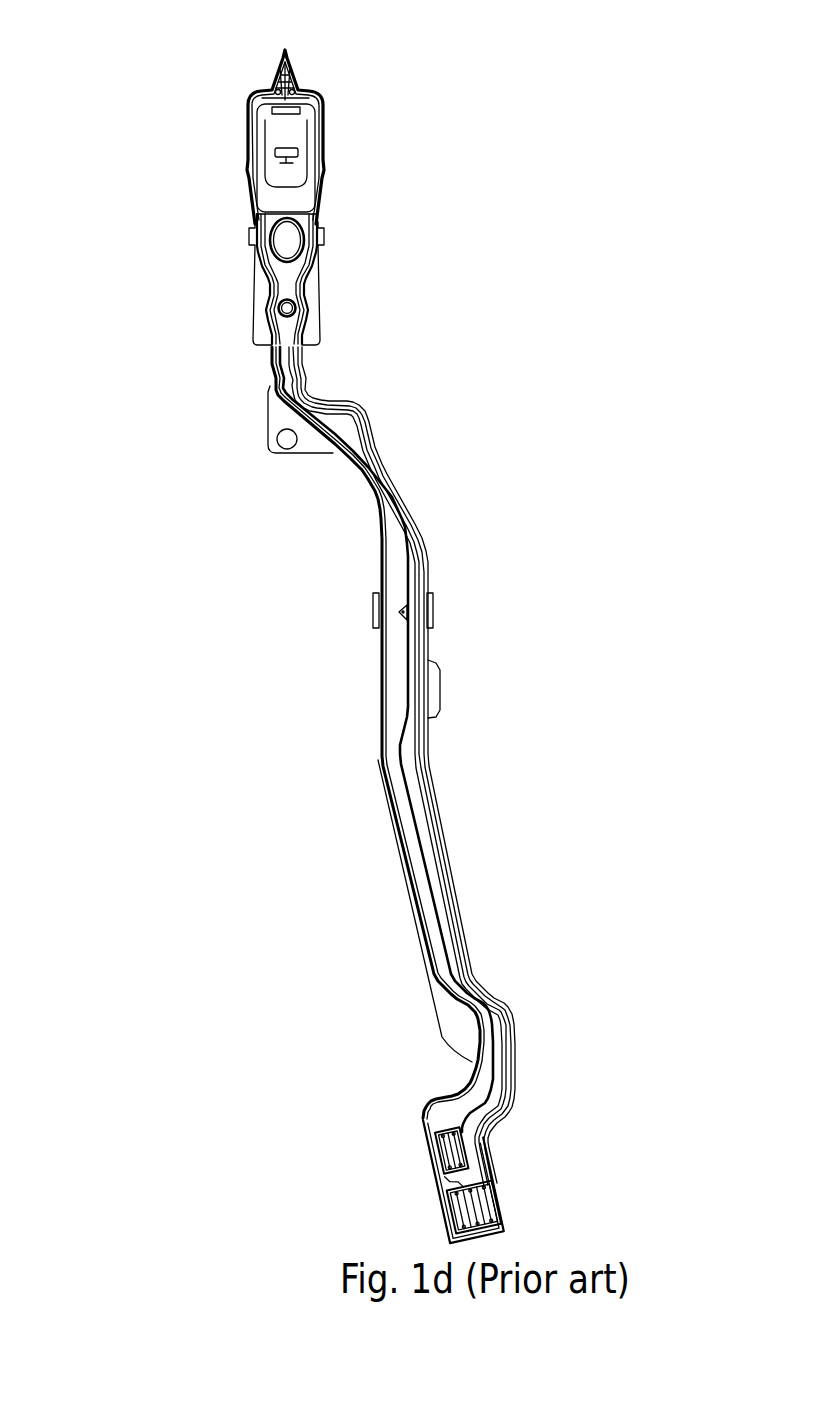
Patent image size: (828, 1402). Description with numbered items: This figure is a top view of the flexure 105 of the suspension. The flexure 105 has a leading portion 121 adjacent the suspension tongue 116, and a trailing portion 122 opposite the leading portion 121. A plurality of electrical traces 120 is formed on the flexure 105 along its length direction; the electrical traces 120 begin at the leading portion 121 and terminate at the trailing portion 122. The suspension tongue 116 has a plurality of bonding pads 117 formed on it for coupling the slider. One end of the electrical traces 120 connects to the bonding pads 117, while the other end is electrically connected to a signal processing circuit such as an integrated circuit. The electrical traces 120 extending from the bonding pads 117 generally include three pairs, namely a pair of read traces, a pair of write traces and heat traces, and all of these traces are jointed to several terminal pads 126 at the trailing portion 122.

The flexure 105 is at (64, 34).
The suspension tongue 116 is at (288, 142).
The bonding pads 117 is at (291, 62).
The electrical traces 120 is at (257, 203).
The leading portion 121 is at (223, 128).
The trailing portion 122 is at (391, 980).
The terminal pads 126 is at (445, 1215).